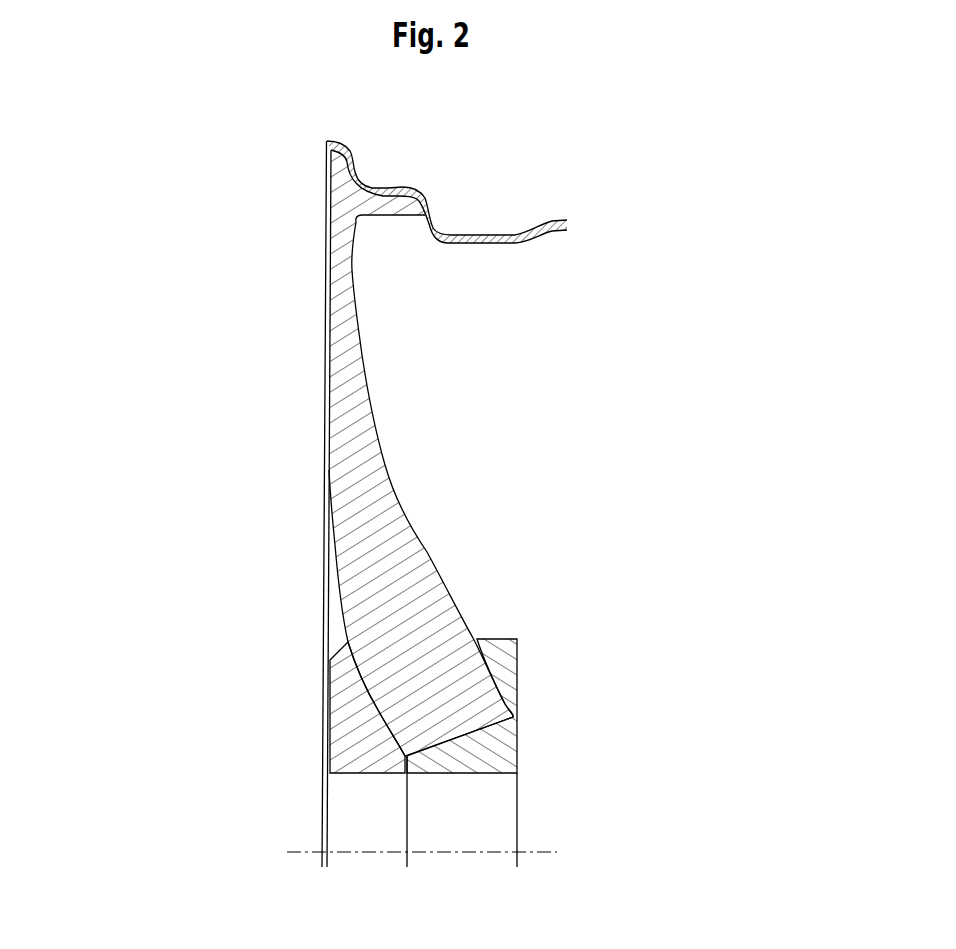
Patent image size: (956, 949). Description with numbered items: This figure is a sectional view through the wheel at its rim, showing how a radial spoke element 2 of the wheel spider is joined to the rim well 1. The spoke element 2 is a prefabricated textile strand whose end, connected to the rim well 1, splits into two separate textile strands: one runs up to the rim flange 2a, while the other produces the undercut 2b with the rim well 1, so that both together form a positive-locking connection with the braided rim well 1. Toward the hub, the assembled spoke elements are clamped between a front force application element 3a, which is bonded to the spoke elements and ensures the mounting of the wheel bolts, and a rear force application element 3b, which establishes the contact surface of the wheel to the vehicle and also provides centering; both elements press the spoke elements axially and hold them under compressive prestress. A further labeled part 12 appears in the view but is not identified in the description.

The rim well 1 is at (528, 233).
The spoke element 2 is at (365, 435).
The rim flange 2a is at (338, 185).
The undercut with the rim well 2b is at (397, 205).
The front force application element 3a is at (360, 745).
The rear force application element 3b is at (485, 745).
The rim wall 12 is at (343, 814).